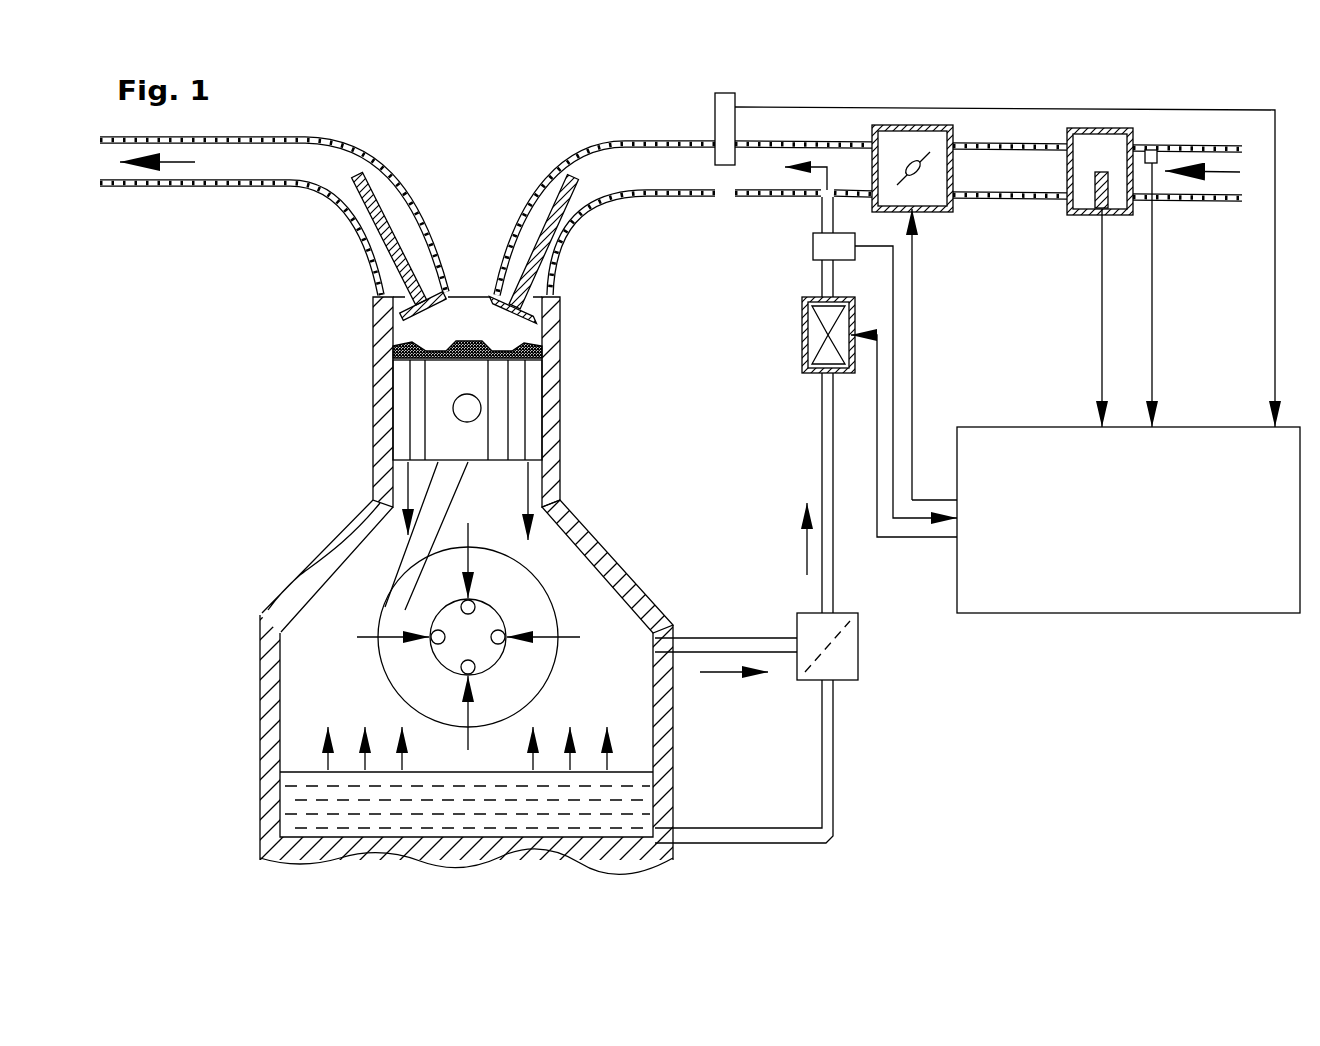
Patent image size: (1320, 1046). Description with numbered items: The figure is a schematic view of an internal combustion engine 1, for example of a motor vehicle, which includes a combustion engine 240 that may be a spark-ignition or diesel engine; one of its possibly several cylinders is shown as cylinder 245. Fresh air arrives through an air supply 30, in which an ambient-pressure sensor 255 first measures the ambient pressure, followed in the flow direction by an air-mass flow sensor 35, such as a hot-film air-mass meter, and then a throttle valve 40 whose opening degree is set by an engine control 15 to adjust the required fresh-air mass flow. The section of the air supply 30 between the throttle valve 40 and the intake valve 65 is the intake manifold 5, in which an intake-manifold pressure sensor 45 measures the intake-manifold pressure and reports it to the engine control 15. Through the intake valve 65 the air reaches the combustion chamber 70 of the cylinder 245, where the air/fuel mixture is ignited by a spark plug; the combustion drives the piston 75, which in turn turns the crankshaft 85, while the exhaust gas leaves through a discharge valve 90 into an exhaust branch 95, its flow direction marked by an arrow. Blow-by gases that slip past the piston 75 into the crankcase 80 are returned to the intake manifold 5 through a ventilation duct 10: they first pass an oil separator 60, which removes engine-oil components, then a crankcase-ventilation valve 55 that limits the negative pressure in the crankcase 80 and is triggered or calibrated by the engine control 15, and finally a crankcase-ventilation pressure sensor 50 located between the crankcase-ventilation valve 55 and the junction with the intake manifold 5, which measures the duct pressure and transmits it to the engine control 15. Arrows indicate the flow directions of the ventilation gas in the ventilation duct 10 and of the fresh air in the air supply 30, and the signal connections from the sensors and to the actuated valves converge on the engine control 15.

The internal combustion engine 1 is at (190, 452).
The intake manifold 5 is at (717, 177).
The ventilation duct 10 is at (731, 638).
The engine control 15 is at (1135, 597).
The air supply 30 is at (645, 213).
The air-mass flow sensor 35 is at (1087, 197).
The throttle valve 40 is at (935, 195).
The intake-manifold pressure sensor 45 is at (723, 113).
The crankcase-ventilation pressure sensor 50 is at (818, 244).
The crankcase-ventilation valve 55 is at (806, 331).
The oil separator 60 is at (852, 647).
The intake valve 65 is at (551, 236).
The combustion chamber 70 is at (520, 333).
The piston 75 is at (517, 408).
The crankcase 80 is at (588, 602).
The crankshaft 85 is at (488, 617).
The discharge valve 90 is at (383, 238).
The exhaust branch 95 is at (248, 168).
The combustion engine 240 is at (683, 746).
The cylinder 245 is at (388, 435).
The ambient-pressure sensor 255 is at (1152, 150).